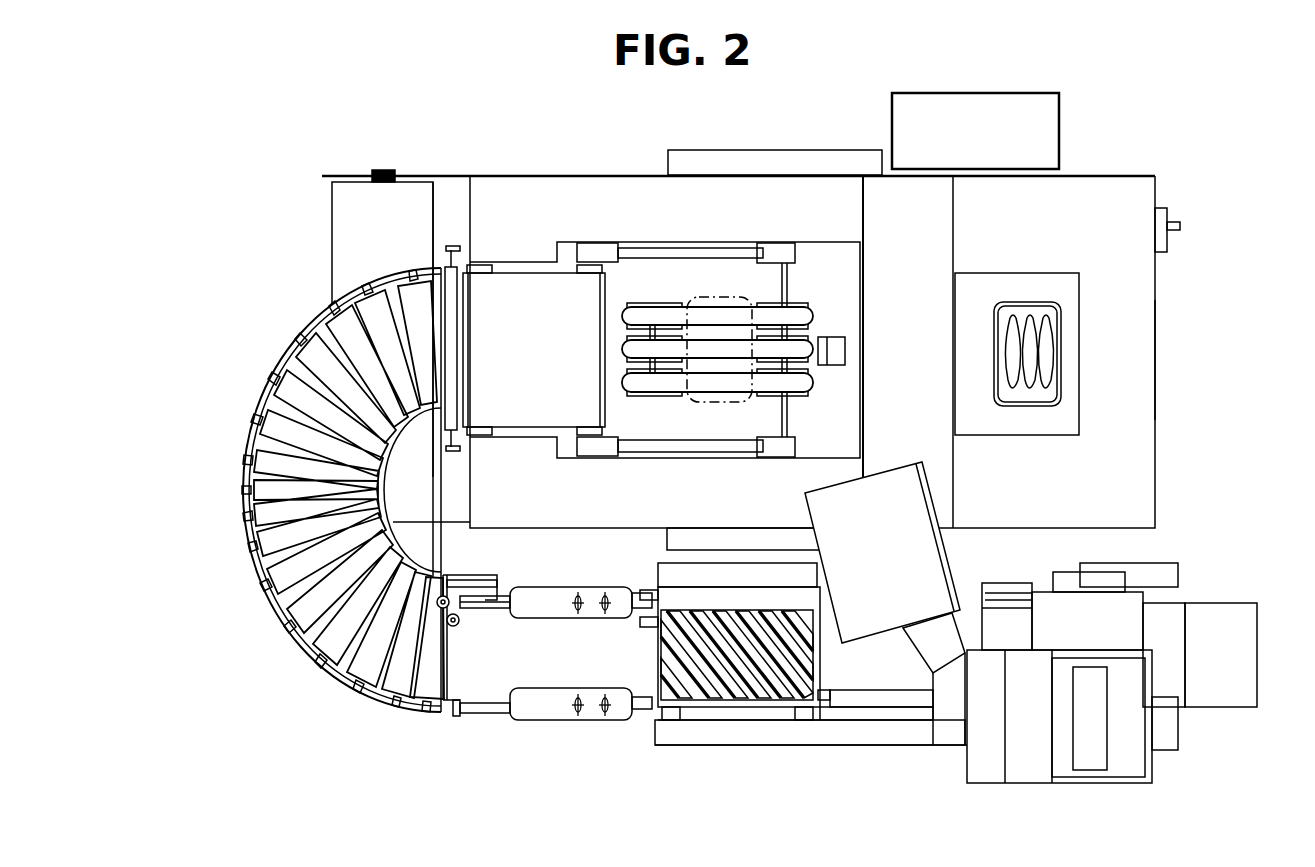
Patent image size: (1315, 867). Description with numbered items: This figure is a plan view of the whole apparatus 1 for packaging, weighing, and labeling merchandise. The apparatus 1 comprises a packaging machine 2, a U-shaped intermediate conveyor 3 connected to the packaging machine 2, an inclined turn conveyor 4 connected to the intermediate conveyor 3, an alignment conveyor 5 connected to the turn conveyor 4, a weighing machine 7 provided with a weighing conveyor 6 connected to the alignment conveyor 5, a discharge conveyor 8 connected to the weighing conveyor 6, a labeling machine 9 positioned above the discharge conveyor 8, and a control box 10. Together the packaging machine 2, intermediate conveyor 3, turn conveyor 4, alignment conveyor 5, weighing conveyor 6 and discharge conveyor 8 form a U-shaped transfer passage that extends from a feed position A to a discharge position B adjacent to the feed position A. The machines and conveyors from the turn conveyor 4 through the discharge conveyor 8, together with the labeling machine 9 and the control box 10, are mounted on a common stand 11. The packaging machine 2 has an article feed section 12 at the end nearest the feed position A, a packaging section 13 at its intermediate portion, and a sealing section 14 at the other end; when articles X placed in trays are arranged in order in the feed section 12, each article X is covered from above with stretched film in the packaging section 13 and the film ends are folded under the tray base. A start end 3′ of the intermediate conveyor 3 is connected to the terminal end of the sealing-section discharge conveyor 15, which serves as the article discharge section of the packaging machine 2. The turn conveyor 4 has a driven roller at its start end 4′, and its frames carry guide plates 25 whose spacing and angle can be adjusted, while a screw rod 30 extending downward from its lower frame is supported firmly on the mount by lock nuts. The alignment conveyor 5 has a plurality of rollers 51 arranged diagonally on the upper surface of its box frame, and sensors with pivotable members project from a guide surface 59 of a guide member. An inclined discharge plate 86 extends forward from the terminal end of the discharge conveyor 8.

The apparatus 1 is at (1146, 142).
The packaging machine 2 is at (609, 192).
The intermediate conveyor 3 is at (330, 477).
The start end 3′ is at (430, 322).
The turn conveyor 4 is at (502, 715).
The start end 4′ is at (448, 660).
The alignment conveyor 5 is at (690, 720).
The weighing conveyor 6 is at (863, 677).
The weighing machine 7 is at (882, 717).
The discharge conveyor 8 is at (1170, 632).
The labeling machine 9 is at (1028, 762).
The control box 10 is at (887, 490).
The common stand 11 is at (803, 735).
The article feed section 12 is at (1080, 353).
The packaging section 13 is at (717, 290).
The sealing section 14 is at (534, 303).
The guide bar 15 is at (510, 283).
The guide plates 25 is at (543, 598).
The screw rod 30 is at (463, 578).
The rollers 51 is at (717, 702).
The guide surface 59 is at (725, 602).
The inclined discharge plate 86 is at (1249, 684).
The feed position A is at (1163, 367).
The discharge position B is at (1268, 663).
The articles X is at (1057, 390).